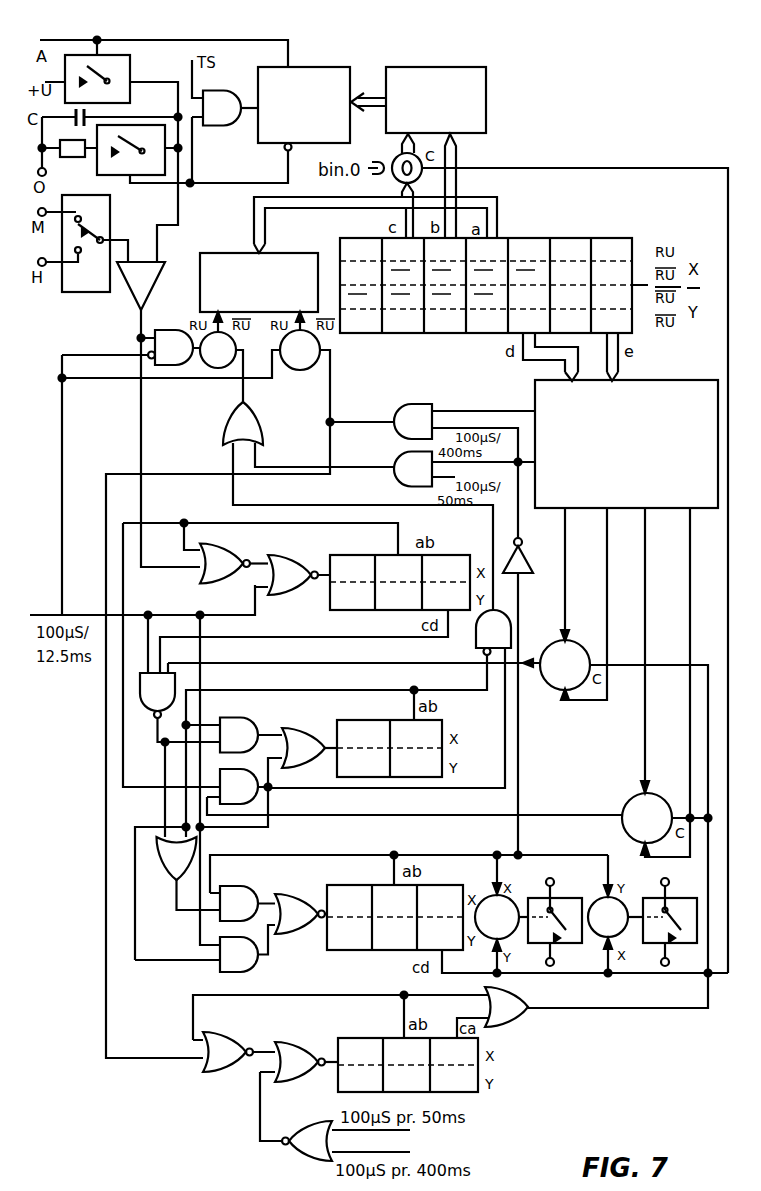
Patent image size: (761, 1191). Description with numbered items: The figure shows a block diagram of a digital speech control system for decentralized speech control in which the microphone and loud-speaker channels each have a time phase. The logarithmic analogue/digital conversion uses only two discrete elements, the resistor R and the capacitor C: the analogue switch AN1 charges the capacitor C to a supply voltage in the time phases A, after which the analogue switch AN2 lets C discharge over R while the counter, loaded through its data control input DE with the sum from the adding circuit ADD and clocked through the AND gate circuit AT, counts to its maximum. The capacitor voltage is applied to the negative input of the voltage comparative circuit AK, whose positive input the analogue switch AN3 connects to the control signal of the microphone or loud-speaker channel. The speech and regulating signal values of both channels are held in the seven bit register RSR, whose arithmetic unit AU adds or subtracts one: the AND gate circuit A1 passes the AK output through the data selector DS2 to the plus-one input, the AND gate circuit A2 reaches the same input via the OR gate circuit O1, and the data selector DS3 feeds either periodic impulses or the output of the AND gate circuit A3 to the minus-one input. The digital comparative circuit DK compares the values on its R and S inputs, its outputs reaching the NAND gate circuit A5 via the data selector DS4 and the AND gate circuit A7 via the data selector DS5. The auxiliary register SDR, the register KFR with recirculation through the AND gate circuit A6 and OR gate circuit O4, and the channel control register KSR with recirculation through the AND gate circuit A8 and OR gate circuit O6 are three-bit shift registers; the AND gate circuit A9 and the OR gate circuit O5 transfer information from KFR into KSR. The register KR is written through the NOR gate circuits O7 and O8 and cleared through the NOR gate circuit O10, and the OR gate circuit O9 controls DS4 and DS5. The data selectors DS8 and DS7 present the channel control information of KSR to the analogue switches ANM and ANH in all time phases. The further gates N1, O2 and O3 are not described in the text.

The analogue switch AN1 is at (97, 79).
The analogue switch AN2 is at (131, 150).
The analogue switch AN3 is at (74, 243).
The voltage comparative circuit AK is at (141, 285).
The AND gate circuit AT is at (222, 108).
The data control input DE is at (304, 105).
The adding circuit ADD is at (436, 100).
The arithmetic unit AU is at (259, 282).
The seven bit register RSR is at (440, 367).
The digital comparative circuit DK is at (626, 444).
The data selector DS2 is at (218, 340).
The data selector DS3 is at (300, 341).
The data selector DS4 is at (573, 604).
The data selector DS5 is at (656, 682).
The data selector DS7 is at (608, 914).
The data selector DS8 is at (497, 914).
The AND gate circuit A1 is at (174, 347).
The AND gate circuit A2 is at (413, 469).
The AND gate circuit A3 is at (413, 421).
The NAND gate circuit A5 is at (157, 695).
The AND gate circuit A6 is at (239, 735).
The AND gate circuit A7 is at (239, 786).
The AND gate circuit A8 is at (239, 903).
The AND gate circuit A9 is at (239, 954).
The NAND gate N1 is at (255, 327).
The OR gate circuit O1 is at (243, 423).
The OR gate O2 is at (225, 564).
The NOR gate O3 is at (293, 575).
The OR gate circuit O4 is at (303, 748).
The OR gate circuit O5 is at (177, 858).
The OR gate circuit O6 is at (300, 914).
The NOR gate circuit O7 is at (228, 1052).
The NOR gate circuit O8 is at (300, 1062).
The OR gate circuit O9 is at (506, 1007).
The NOR gate circuit O10 is at (307, 1141).
The auxiliary register SDR is at (400, 571).
The auxiliary register KFR is at (389, 737).
The channel control register KSR is at (395, 906).
The auxiliary register KR is at (408, 1053).
The analogue switch ANM is at (558, 924).
The analogue switch ANH is at (671, 924).
The resistor R is at (72, 160).
The capacitor C is at (55, 119).